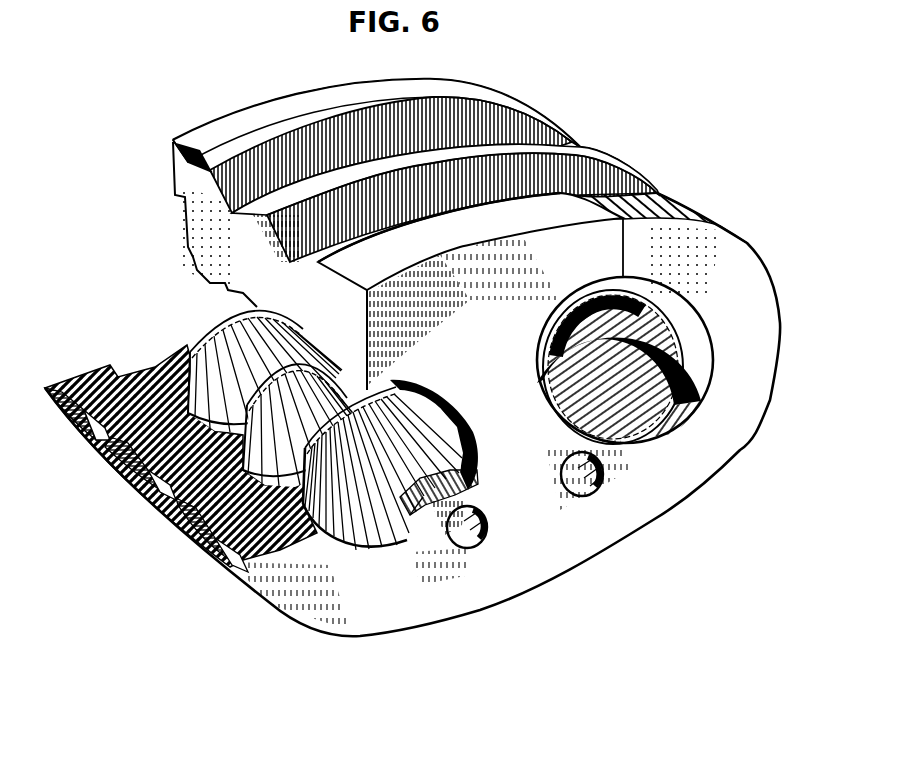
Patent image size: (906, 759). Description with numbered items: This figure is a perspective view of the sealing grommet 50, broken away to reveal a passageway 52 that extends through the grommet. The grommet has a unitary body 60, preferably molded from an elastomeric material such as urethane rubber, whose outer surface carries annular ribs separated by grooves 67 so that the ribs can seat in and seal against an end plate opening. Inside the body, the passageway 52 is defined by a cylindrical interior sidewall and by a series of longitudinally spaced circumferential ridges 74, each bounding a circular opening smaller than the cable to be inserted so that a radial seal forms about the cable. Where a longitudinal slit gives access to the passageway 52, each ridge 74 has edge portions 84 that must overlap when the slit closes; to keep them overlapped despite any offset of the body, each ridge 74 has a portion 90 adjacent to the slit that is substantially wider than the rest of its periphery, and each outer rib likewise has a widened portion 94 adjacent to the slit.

The sealing grommet 50 is at (636, 97).
The passageway 52 is at (663, 393).
The unitary body 60 is at (578, 520).
The groove 67 is at (340, 140).
The circumferential ridge 74 is at (367, 530).
The edge portion 84 is at (250, 313).
The widened ridge portion 90 is at (210, 280).
The widened rib portion 94 is at (200, 140).